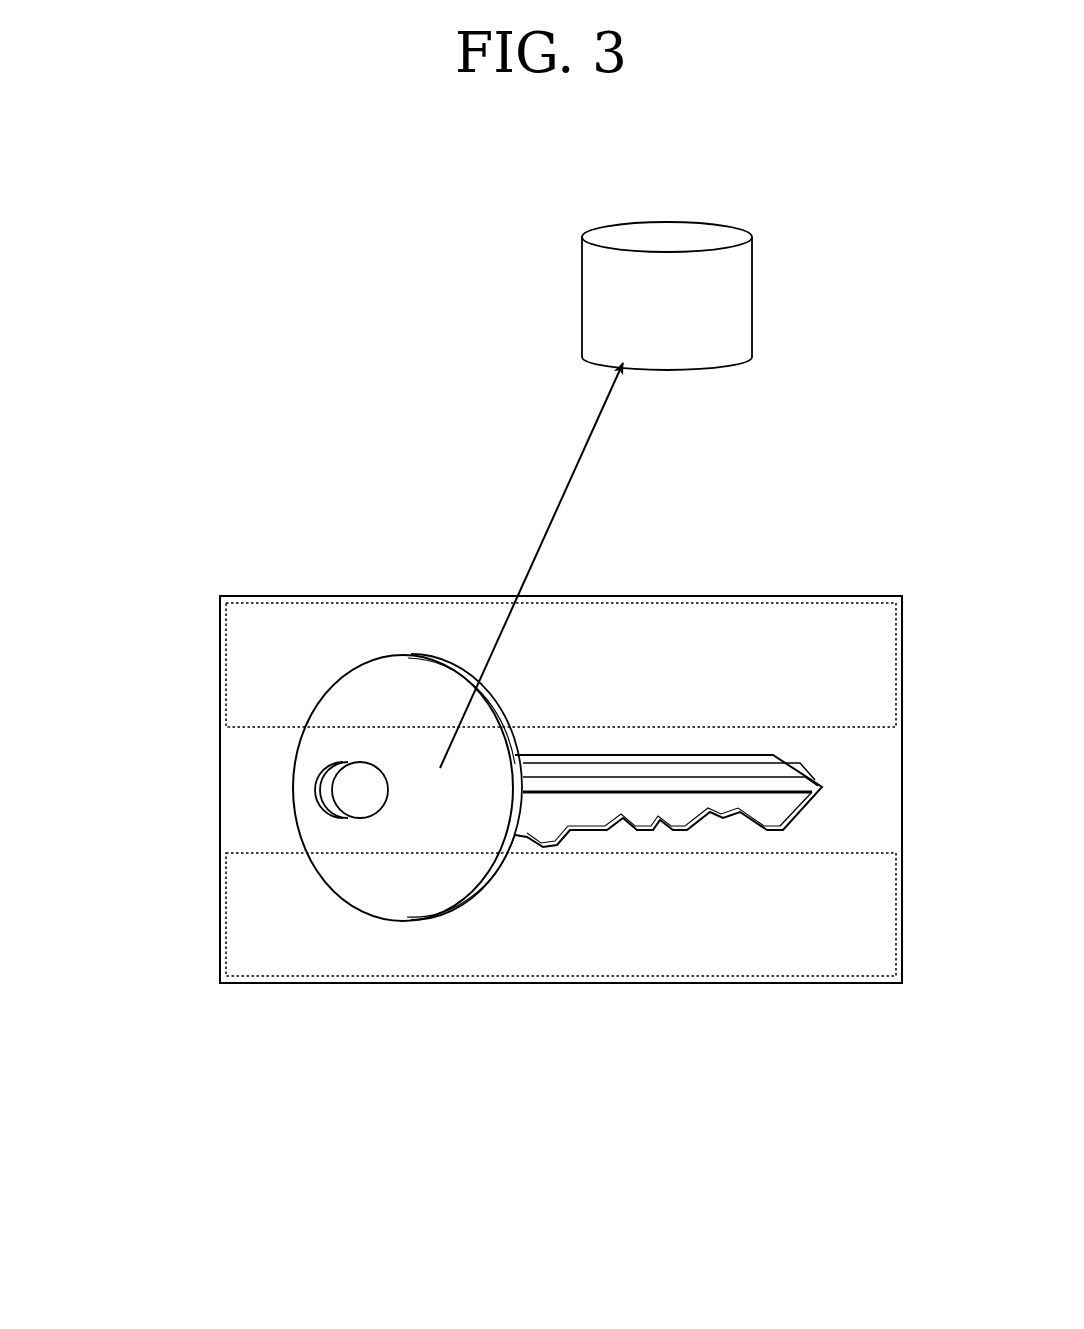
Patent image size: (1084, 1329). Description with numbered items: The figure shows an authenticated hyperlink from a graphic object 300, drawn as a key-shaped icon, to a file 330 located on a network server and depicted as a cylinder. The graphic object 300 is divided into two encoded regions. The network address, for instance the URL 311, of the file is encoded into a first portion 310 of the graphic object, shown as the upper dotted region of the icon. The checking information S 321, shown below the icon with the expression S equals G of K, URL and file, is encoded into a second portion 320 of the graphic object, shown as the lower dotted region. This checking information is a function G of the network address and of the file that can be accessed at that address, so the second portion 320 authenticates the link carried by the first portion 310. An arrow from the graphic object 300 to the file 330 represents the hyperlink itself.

The graphic object 300 is at (258, 793).
The first portion of the graphic object 310 is at (345, 635).
The network address (URL) 311 is at (732, 642).
The second portion of the graphic object 320 is at (355, 943).
The checking information S 321 is at (668, 930).
The file 330 is at (668, 494).